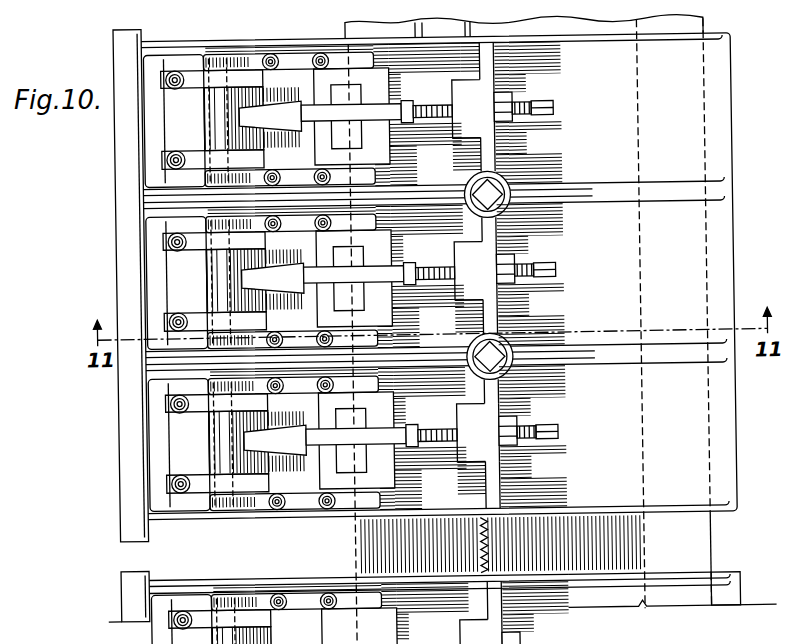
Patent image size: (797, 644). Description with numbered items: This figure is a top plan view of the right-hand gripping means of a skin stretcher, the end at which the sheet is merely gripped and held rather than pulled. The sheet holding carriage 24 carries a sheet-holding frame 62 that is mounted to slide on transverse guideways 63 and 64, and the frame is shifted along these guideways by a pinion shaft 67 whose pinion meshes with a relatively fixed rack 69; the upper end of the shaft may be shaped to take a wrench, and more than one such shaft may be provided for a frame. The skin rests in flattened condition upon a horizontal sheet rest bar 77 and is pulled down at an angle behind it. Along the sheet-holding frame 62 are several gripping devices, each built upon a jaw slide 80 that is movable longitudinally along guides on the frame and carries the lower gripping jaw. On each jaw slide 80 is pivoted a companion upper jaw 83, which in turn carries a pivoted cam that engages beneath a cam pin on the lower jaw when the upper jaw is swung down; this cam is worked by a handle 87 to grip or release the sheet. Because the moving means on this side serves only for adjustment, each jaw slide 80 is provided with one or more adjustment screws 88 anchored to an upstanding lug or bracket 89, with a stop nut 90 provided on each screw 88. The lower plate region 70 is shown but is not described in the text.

The sheet holding carriage 24 is at (714, 534).
The sheet-holding frame 62 is at (734, 262).
The transverse guideway 63 is at (690, 559).
The transverse guideway 64 is at (360, 560).
The pinion shaft 67 is at (497, 206).
The rack 69 is at (460, 560).
The lower plate 70 is at (583, 570).
The sheet rest bar 77 is at (123, 272).
The jaw slide 80 is at (288, 60).
The upper jaw 83 is at (175, 266).
The handle 87 is at (398, 278).
The adjustment screw 88 is at (441, 134).
The bracket 89 is at (486, 139).
The stop nut 90 is at (512, 105).